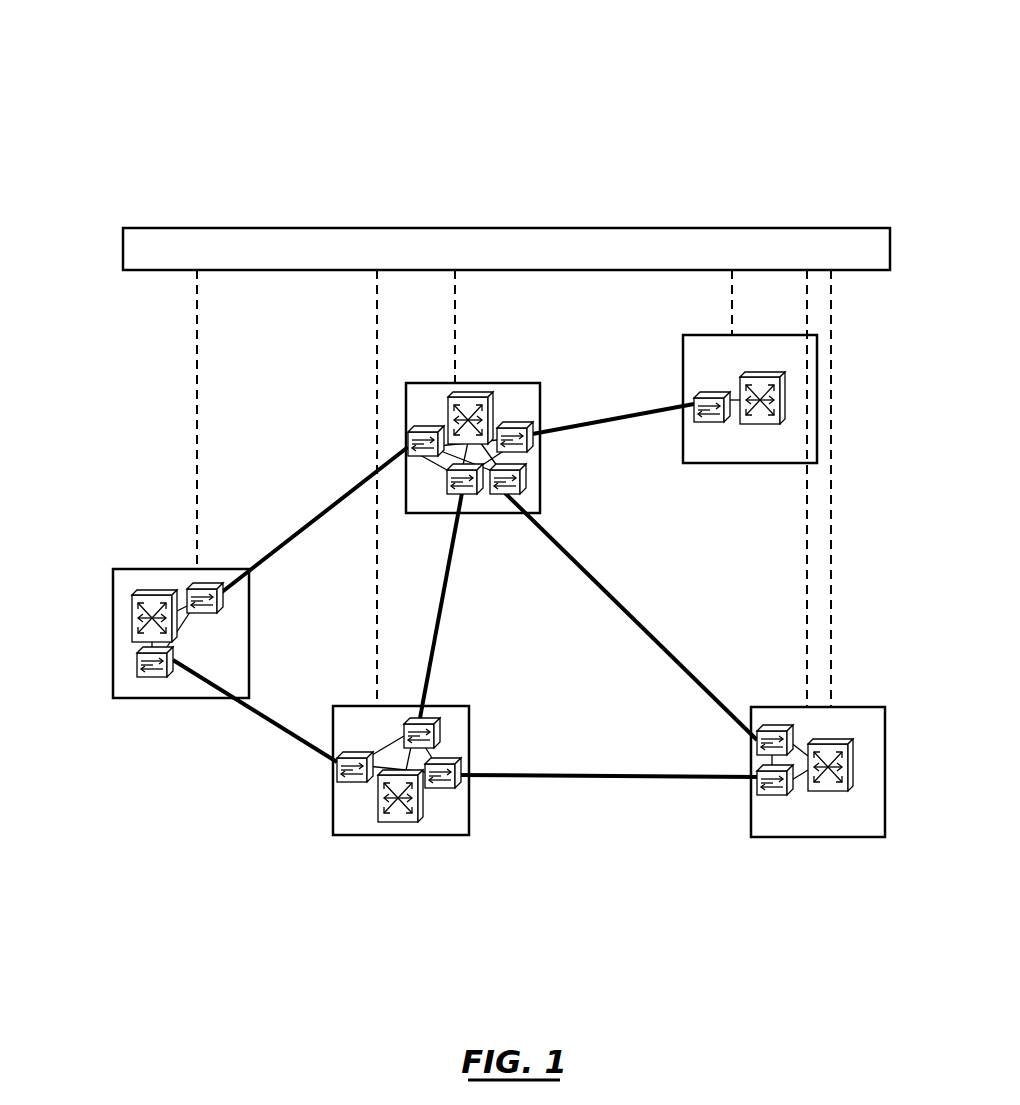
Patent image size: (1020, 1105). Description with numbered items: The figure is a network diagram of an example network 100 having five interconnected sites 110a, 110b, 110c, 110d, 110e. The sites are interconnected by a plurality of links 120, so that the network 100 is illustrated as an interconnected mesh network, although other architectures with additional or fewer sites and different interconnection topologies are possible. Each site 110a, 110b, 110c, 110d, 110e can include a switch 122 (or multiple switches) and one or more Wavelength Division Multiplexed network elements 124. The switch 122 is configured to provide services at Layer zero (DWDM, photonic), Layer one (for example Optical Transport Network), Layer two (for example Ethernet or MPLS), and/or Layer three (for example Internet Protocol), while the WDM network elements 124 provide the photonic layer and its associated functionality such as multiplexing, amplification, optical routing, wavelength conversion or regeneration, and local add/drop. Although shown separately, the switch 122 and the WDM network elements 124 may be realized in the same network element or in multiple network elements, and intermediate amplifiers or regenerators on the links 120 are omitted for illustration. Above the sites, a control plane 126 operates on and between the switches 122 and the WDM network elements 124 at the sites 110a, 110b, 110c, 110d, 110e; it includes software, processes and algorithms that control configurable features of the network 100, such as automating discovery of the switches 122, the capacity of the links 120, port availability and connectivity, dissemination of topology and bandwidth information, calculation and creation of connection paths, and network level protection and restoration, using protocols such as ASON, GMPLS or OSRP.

The network 100 is at (580, 50).
The site 110a is at (113, 667).
The site 110b is at (508, 383).
The site 110c is at (766, 408).
The site 110d is at (790, 837).
The site 110e is at (333, 815).
The link 120 is at (307, 525).
The switch 122 is at (767, 372).
The WDM network element 124 is at (713, 393).
The control plane 126 is at (652, 228).